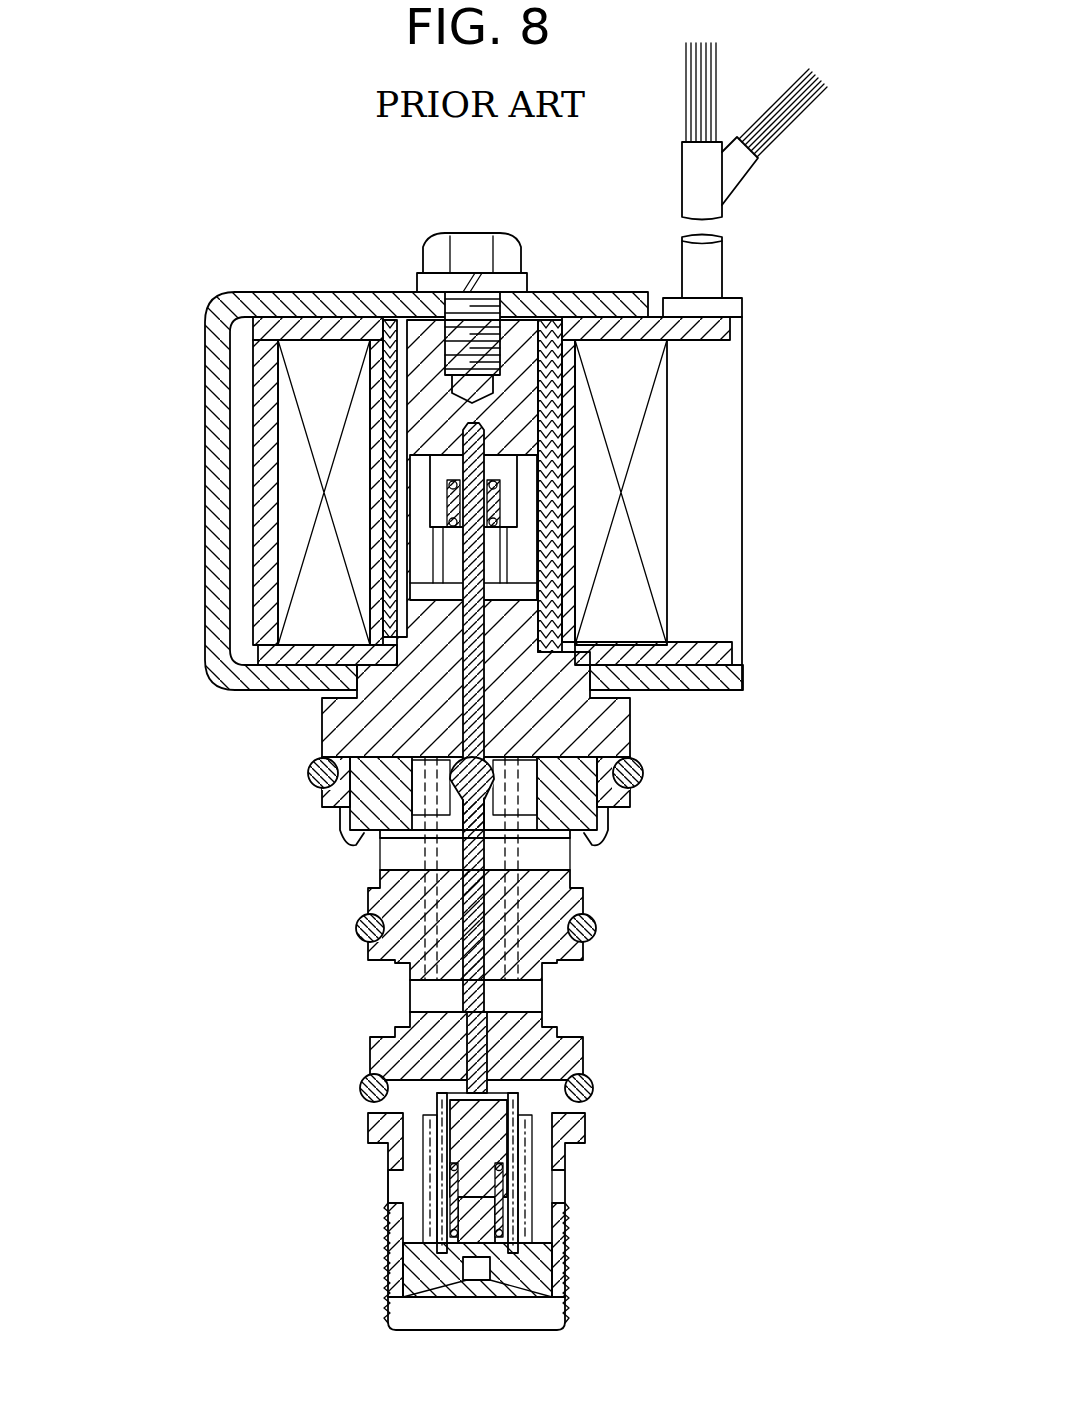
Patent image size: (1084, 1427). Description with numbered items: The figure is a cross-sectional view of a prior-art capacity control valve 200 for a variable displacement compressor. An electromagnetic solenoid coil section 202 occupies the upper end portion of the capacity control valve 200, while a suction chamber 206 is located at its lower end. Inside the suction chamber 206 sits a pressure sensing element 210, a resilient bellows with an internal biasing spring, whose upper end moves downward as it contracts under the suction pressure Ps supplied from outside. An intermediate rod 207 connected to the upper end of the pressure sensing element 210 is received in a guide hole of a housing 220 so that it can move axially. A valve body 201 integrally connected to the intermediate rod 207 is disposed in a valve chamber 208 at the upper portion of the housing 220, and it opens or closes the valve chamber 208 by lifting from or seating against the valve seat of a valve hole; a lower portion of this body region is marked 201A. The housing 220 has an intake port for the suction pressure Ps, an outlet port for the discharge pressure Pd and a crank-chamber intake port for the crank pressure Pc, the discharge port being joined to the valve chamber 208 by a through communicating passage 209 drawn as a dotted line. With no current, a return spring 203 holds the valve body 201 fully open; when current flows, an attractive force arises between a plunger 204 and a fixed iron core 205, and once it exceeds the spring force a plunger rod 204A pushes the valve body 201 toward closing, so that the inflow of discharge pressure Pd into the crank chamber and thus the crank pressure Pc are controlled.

The capacity control valve 200 is at (776, 334).
The valve body 201 is at (555, 755).
The lower valve body portion 201A is at (487, 895).
The electromagnetic solenoid coil section 202 is at (676, 540).
The return spring 203 is at (447, 763).
The plunger 204 is at (420, 565).
The plunger rod 204A is at (465, 717).
The fixed iron core 205 is at (345, 745).
The suction chamber 206 is at (415, 1225).
The intermediate rod 207 is at (465, 1047).
The valve chamber 208 is at (598, 822).
The through communicating passage 209 is at (445, 957).
The pressure sensing element 210 is at (538, 1126).
The housing 220 is at (575, 1052).
The crank pressure Pc is at (550, 853).
The discharge pressure Pd is at (535, 993).
The suction pressure Ps is at (558, 1188).